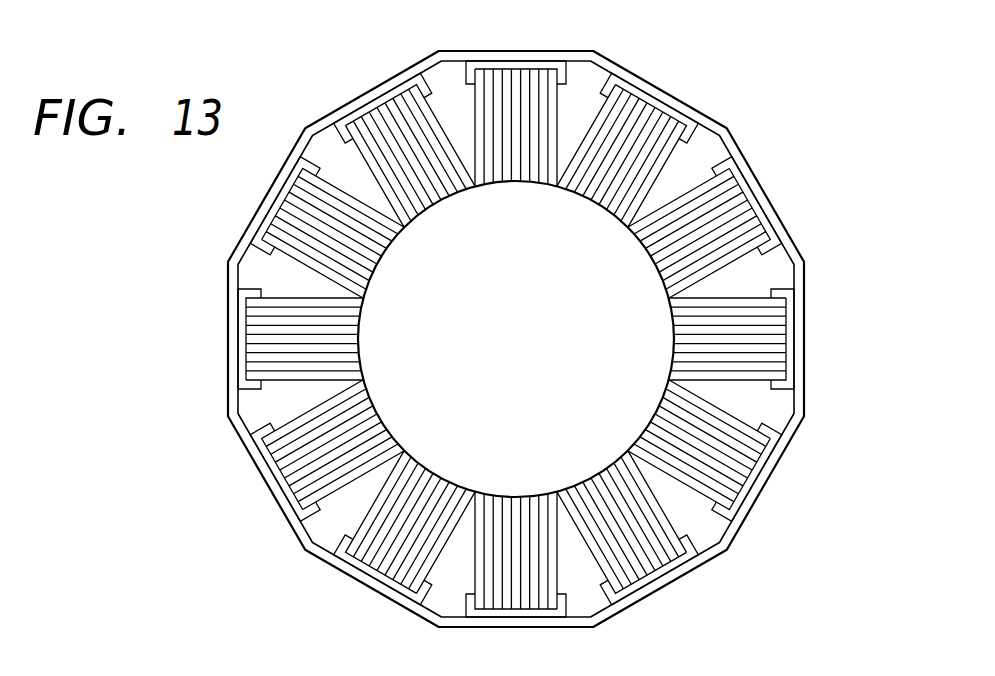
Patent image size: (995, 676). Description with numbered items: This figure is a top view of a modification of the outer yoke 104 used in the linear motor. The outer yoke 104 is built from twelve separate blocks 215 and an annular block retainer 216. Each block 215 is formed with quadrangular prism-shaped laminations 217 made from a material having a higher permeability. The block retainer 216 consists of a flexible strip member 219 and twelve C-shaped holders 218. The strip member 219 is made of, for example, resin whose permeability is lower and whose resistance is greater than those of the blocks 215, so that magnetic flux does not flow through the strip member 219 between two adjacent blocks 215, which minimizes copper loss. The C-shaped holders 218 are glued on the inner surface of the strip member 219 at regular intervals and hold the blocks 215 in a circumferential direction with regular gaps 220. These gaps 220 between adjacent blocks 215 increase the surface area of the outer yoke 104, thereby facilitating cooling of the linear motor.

The outer yoke 104 is at (318, 114).
The block 215 is at (713, 255).
The block retainer 216 is at (792, 430).
The laminations 217 is at (737, 215).
The C-shaped holder 218 is at (788, 342).
The strip member 219 is at (775, 477).
The gap 220 is at (778, 408).